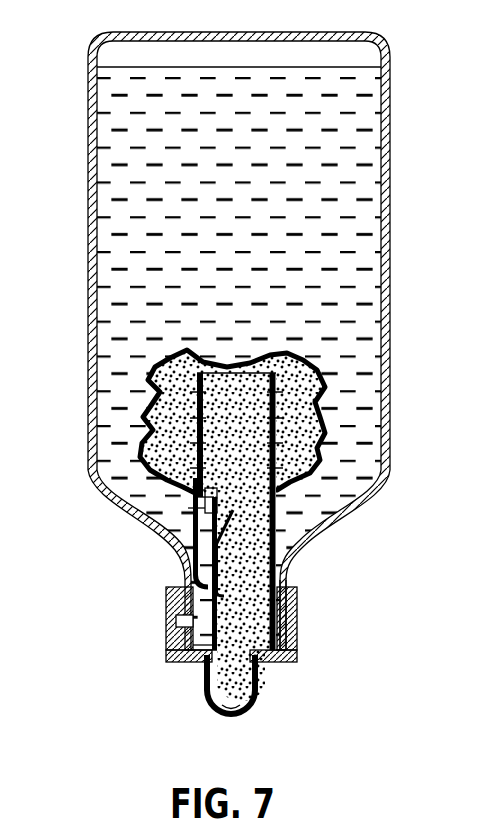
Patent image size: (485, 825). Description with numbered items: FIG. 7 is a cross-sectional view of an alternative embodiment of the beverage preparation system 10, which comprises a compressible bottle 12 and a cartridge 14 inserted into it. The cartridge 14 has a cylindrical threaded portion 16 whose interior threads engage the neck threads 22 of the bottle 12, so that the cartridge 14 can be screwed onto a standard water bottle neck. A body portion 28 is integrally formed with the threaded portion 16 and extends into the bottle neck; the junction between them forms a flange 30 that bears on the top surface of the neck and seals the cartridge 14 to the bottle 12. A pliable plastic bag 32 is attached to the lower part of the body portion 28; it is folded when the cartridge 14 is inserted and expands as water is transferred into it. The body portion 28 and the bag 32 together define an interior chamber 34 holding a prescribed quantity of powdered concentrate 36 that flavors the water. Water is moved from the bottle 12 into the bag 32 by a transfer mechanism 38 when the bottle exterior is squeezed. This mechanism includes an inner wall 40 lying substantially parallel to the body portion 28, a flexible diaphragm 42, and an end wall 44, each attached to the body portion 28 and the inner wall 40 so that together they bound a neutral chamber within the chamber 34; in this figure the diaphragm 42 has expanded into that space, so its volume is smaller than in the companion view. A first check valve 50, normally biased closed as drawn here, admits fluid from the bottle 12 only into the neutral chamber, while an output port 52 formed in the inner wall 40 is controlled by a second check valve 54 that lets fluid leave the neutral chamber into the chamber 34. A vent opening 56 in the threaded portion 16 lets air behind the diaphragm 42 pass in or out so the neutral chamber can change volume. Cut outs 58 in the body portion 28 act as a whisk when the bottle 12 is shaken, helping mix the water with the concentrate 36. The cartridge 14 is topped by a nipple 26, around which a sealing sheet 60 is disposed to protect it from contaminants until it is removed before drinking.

The beverage preparation system 10 is at (253, 394).
The compressible bottle 12 is at (390, 194).
The cartridge 14 is at (230, 706).
The threaded portion 16 is at (237, 633).
The neck threads 22 is at (297, 602).
The nipple 26 is at (250, 668).
The body portion 28 is at (282, 520).
The flange 30 is at (297, 658).
The bag 32 is at (318, 371).
The interior chamber 34 is at (317, 537).
The concentrate 36 is at (272, 497).
The transfer mechanism 38 is at (203, 557).
The inner wall 40 is at (207, 603).
The diaphragm 42 is at (208, 628).
The end wall 44 is at (188, 492).
The first check valve 50 is at (128, 528).
The output port 52 is at (196, 512).
The second check valve 54 is at (196, 521).
The vent opening 56 is at (208, 654).
The cut outs 58 is at (278, 440).
The sealing sheet 60 is at (238, 716).